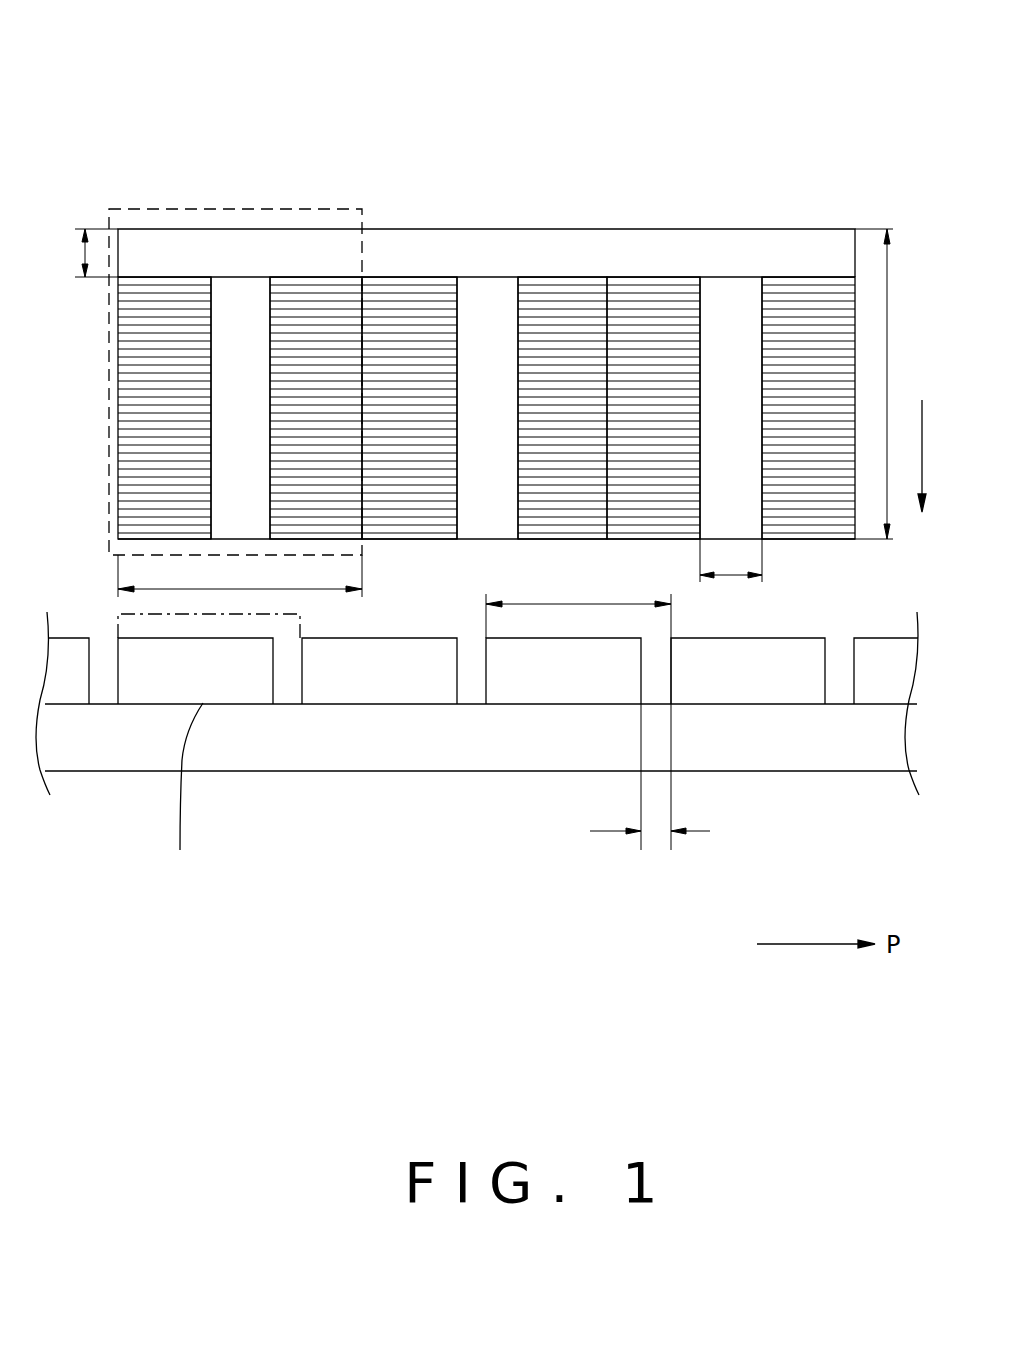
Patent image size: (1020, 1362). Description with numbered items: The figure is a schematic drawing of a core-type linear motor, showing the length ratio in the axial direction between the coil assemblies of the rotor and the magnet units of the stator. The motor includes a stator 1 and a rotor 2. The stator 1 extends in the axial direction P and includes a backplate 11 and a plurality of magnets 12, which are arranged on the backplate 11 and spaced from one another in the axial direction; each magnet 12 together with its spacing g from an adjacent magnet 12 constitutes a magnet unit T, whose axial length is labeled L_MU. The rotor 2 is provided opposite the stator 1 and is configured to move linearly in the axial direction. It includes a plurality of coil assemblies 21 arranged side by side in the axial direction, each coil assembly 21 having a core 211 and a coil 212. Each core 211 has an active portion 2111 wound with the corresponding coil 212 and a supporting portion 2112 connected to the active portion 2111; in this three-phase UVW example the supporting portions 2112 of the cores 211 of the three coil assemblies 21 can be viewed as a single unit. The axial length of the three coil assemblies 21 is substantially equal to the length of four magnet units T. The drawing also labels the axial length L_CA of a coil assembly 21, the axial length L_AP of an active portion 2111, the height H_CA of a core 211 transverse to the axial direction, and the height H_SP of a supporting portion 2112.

The stator 1 is at (477, 734).
The backplate 11 is at (453, 758).
The magnet 12 is at (550, 692).
The rotor 2 is at (485, 308).
The coil assembly 21 is at (344, 207).
The core 211 is at (484, 279).
The active portion 2111 is at (240, 337).
The supporting portion 2112 is at (166, 250).
The coil 212 is at (135, 396).